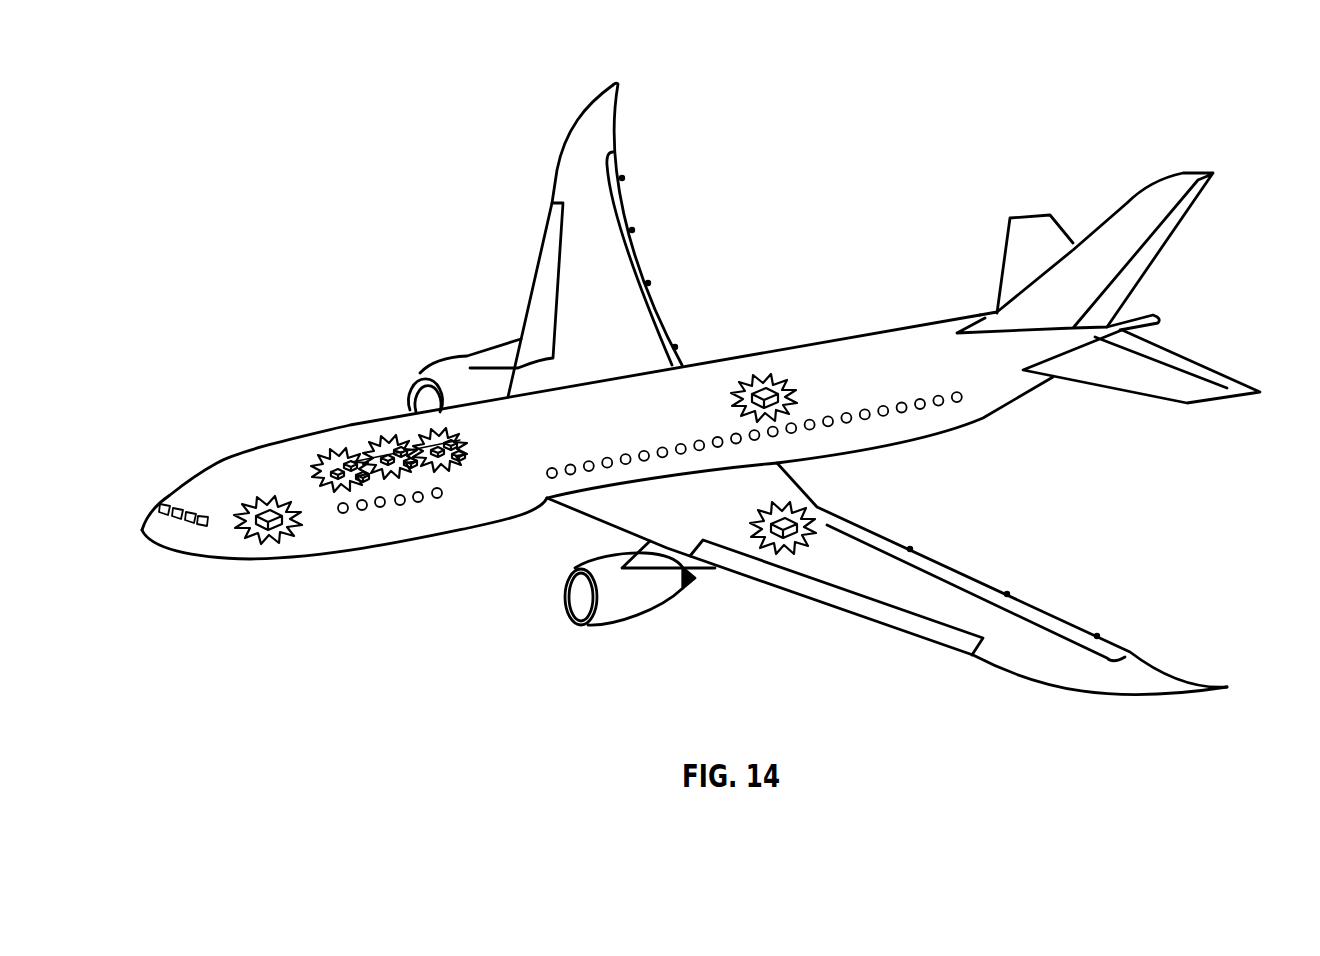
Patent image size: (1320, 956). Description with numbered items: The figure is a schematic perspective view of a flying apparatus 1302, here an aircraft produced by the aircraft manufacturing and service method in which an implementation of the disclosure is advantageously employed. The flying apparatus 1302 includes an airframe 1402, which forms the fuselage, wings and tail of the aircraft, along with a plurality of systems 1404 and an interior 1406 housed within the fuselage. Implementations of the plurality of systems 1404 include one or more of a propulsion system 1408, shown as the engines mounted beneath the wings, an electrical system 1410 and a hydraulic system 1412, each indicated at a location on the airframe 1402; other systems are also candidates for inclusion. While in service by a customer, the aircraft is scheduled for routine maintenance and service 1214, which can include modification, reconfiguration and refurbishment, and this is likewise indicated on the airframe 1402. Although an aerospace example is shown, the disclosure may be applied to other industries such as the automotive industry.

The flying apparatus 1302 is at (308, 172).
The airframe 1402 is at (475, 578).
The plurality of systems 1404 is at (865, 307).
The interior 1406 is at (348, 448).
The propulsion system 1408 is at (448, 370).
The electrical system 1410 is at (268, 494).
The hydraulic system 1412 is at (783, 512).
The maintenance and service 1214 is at (772, 380).